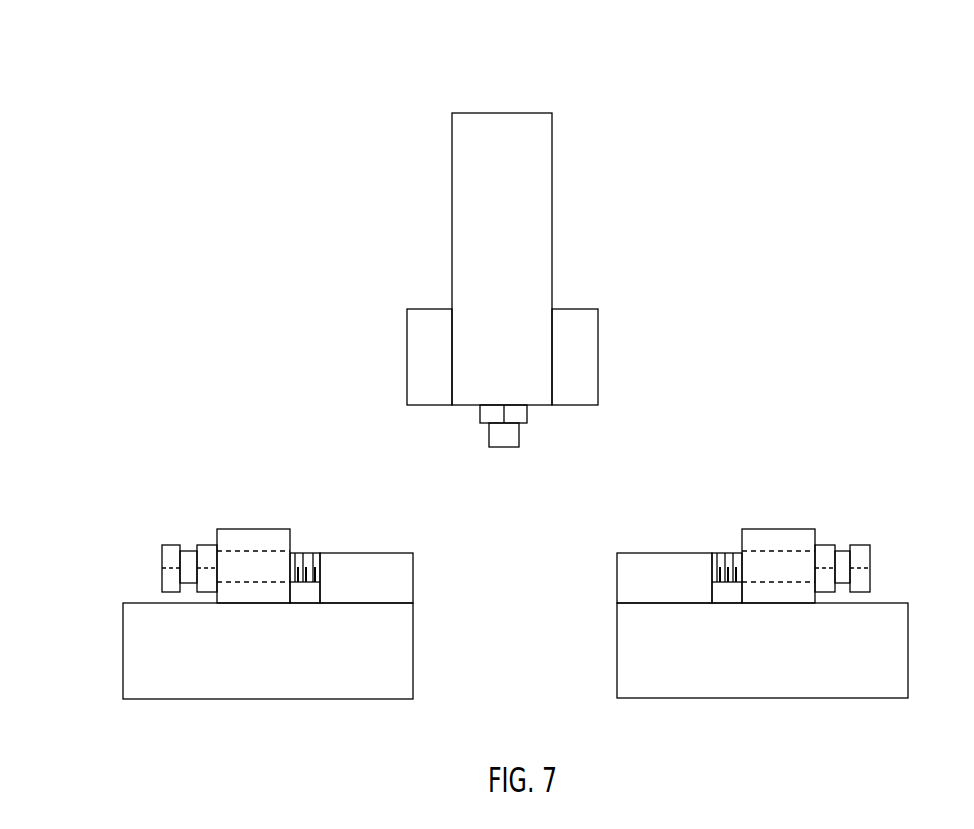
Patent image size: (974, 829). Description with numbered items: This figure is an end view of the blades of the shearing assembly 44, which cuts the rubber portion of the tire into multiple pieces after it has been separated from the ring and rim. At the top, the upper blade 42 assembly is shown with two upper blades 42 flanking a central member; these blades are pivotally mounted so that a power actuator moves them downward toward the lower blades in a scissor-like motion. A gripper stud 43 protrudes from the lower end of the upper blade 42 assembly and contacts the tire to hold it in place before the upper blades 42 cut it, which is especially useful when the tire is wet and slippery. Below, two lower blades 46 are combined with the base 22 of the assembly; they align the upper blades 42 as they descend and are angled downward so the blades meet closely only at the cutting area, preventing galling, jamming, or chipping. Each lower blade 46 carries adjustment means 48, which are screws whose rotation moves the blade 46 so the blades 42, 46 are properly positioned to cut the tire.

The base 22 is at (286, 661).
The upper blade 42 is at (417, 370).
The gripper stud 43 is at (512, 433).
The shearing assembly 44 is at (505, 92).
The lower blade 46 is at (397, 583).
The adjustment means 48 is at (170, 575).